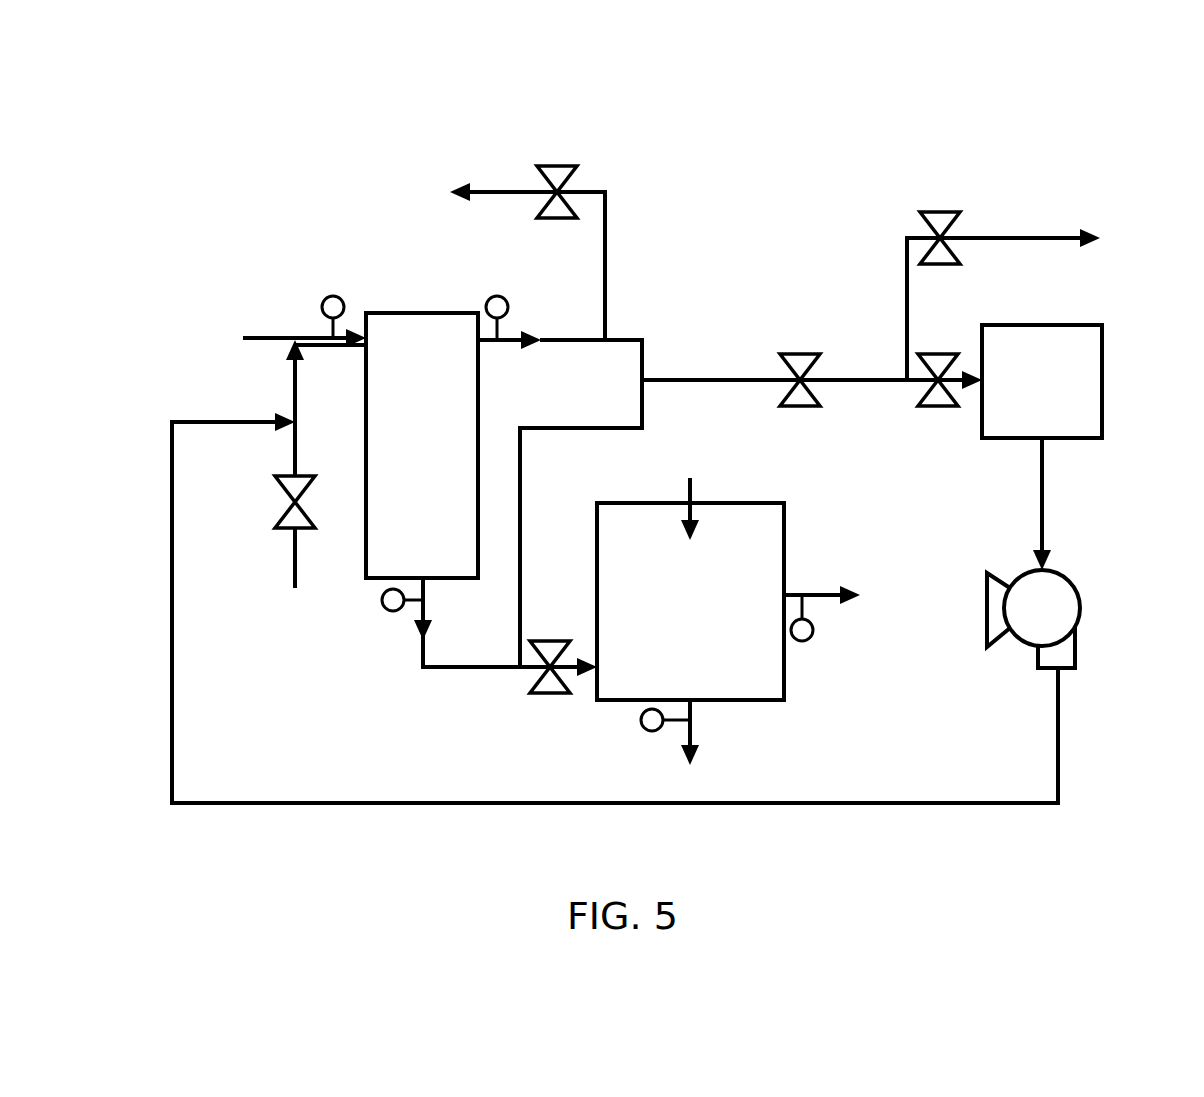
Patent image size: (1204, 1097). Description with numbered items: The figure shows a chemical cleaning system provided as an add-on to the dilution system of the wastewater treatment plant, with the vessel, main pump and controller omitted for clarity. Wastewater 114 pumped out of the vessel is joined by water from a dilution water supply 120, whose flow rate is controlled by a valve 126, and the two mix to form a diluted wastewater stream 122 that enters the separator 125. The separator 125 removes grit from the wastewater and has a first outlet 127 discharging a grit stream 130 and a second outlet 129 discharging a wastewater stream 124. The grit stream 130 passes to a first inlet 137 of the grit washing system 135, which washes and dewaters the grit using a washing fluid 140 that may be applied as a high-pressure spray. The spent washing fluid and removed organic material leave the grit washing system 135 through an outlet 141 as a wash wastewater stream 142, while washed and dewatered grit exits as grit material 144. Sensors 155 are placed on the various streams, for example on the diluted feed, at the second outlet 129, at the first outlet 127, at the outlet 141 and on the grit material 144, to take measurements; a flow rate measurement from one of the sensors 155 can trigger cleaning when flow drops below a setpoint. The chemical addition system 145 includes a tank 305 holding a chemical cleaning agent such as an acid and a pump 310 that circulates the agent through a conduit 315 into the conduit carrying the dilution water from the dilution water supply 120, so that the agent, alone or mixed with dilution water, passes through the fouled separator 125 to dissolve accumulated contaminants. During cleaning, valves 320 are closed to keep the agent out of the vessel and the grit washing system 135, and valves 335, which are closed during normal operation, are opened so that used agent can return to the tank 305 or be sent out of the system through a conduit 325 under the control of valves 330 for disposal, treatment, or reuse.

The wastewater 114 is at (268, 337).
The dilution water supply 120 is at (294, 481).
The diluted wastewater stream 122 is at (313, 337).
The wastewater stream 124 is at (571, 503).
The separator 125 is at (422, 445).
The valve 126 is at (283, 500).
The first outlet 127 is at (422, 572).
The second outlet 129 is at (472, 343).
The grit stream 130 is at (510, 652).
The grit washing system 135 is at (690, 601).
The first inlet 137 is at (600, 663).
The washing fluid 140 is at (692, 491).
The outlet 141 is at (703, 670).
The wash wastewater stream 142 is at (733, 732).
The grit material 144 is at (855, 595).
The chemical addition system 145 is at (997, 170).
The sensor 155 is at (340, 298).
The tank 305 is at (1042, 447).
The pump 310 is at (1072, 608).
The conduit 315 is at (615, 608).
The valve 320 is at (548, 180).
The conduit 325 is at (1042, 260).
The valve 330 is at (938, 220).
The valve 335 is at (803, 358).